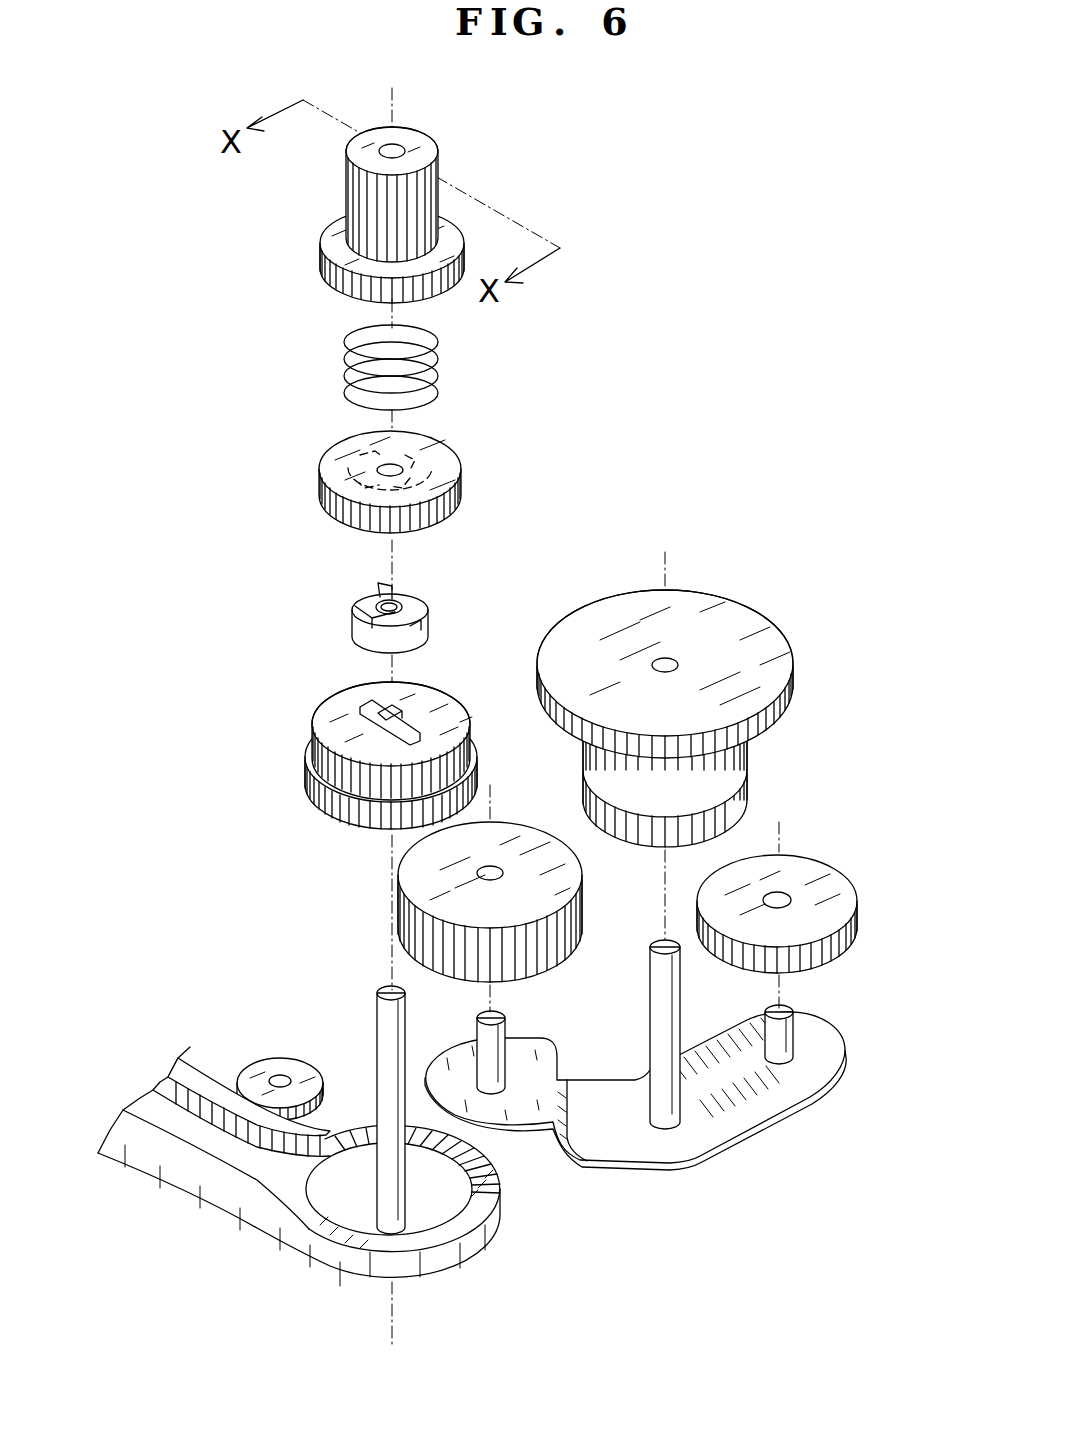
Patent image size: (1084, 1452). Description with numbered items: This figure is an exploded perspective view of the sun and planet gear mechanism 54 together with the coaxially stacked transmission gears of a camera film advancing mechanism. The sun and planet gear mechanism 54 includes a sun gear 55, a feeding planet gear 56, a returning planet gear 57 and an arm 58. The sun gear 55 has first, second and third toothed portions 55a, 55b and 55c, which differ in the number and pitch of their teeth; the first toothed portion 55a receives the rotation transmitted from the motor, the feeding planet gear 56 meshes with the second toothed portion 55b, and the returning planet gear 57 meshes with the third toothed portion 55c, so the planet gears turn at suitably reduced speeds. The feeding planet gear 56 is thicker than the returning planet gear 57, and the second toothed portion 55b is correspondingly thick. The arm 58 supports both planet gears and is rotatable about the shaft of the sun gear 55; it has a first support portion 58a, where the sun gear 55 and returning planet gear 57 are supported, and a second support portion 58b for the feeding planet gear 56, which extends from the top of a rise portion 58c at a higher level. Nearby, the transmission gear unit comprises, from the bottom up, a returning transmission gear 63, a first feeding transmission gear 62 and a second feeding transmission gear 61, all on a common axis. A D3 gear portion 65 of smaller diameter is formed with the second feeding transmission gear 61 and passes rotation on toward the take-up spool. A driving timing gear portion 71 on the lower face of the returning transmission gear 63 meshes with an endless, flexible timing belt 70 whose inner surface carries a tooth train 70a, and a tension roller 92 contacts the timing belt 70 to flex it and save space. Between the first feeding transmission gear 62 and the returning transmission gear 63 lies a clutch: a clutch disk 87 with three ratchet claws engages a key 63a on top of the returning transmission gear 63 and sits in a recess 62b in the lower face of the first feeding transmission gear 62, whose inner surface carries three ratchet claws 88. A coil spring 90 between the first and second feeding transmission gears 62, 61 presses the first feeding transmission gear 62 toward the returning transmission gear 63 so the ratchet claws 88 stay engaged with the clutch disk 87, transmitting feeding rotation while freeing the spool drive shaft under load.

The sun and planet gear mechanism 54 is at (681, 1108).
The sun gear 55 is at (725, 665).
The first toothed portion 55a is at (796, 690).
The second toothed portion 55b is at (750, 768).
The third toothed portion 55c is at (752, 806).
The feeding planet gear 56 is at (518, 828).
The returning planet gear 57 is at (825, 877).
The arm 58 is at (681, 1110).
The first support portion 58a is at (826, 1042).
The second support portion 58b is at (518, 1102).
The rise portion 58c is at (606, 1155).
The second feeding transmission gear 61 is at (348, 264).
The first feeding transmission gear 62 is at (421, 466).
The recess 62b is at (420, 468).
The returning transmission gear 63 is at (375, 715).
The key 63a is at (410, 722).
The D3 gear portion 65 is at (358, 186).
The timing belt 70 is at (299, 1166).
The tooth train 70a is at (290, 1140).
The driving timing gear portion 71 is at (314, 795).
The clutch disk 87 is at (350, 610).
The ratchet claws 88 is at (342, 448).
The coil spring 90 is at (440, 362).
The tension roller 92 is at (283, 1060).